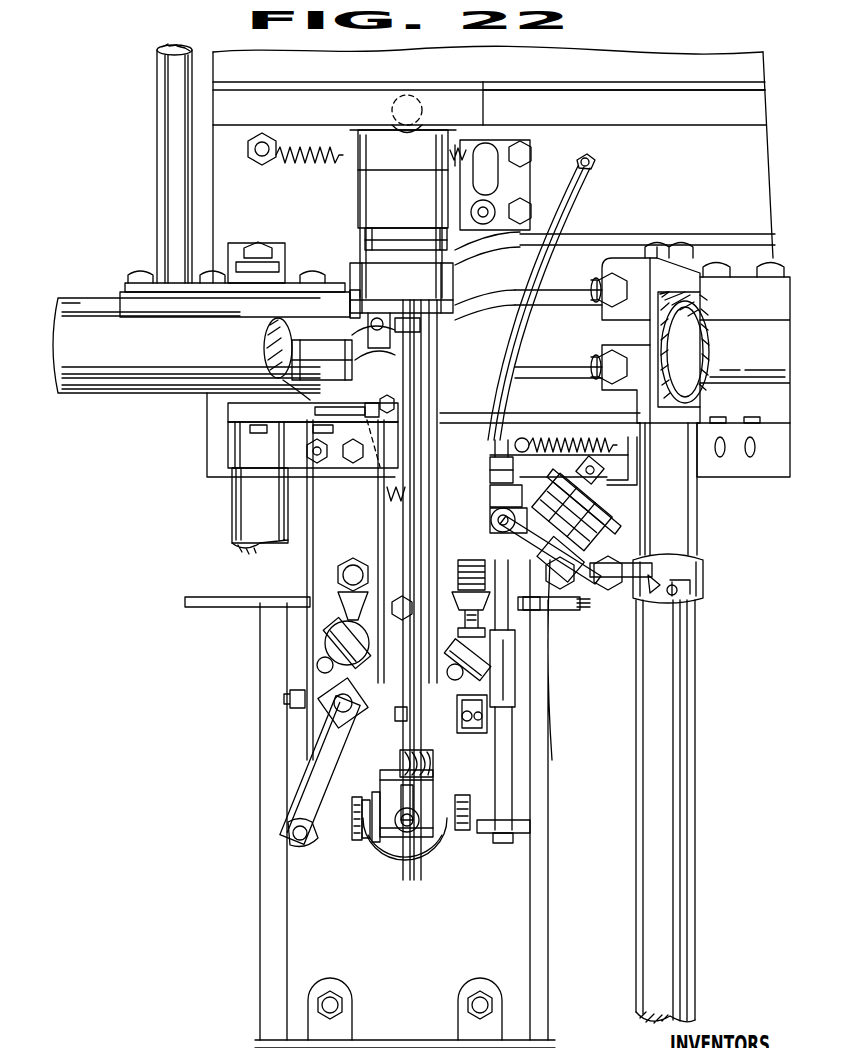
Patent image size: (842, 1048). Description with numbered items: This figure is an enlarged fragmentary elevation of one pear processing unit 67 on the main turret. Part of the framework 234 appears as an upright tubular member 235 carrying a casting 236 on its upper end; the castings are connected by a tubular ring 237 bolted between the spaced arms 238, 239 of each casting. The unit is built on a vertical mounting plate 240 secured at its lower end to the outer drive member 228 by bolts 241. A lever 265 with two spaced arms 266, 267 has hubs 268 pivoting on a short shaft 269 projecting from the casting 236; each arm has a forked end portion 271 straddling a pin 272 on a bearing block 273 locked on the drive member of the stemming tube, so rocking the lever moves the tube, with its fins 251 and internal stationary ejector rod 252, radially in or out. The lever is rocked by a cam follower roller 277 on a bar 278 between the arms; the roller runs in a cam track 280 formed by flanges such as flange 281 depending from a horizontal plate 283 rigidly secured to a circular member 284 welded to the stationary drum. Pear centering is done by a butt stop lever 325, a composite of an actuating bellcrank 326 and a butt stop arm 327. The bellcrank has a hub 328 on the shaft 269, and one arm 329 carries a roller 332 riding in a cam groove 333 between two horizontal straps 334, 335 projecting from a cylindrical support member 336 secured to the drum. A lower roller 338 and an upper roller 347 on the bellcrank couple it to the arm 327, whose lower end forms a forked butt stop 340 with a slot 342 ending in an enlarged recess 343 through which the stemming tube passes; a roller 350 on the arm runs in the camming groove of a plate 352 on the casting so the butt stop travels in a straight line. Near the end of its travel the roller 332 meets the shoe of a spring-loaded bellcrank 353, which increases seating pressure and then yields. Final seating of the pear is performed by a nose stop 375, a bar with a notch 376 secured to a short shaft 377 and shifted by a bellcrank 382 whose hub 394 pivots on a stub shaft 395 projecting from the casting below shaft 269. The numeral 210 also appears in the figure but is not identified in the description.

The circular member 284 is at (322, 78).
The horizontal plate 283 is at (553, 88).
The flange 281 is at (635, 119).
The cam follower roller 277 is at (390, 108).
The cam track 280 is at (700, 134).
The casting 236 is at (245, 244).
The lever arm 266 is at (358, 198).
The lever arm 267 is at (440, 195).
The spring loaded bellcrank 353 is at (463, 220).
The bar 278 is at (381, 164).
The hub 328 is at (418, 292).
The short shaft 269 is at (450, 292).
The horizontal strap 334 is at (607, 236).
The cam groove 333 is at (580, 243).
The horizontal strap 335 is at (530, 297).
The cylindrical support member 336 is at (630, 247).
The arm of casting 238 is at (723, 287).
The arm of casting 239 is at (717, 413).
The tubular ring 237 is at (127, 350).
The hub 268 is at (360, 303).
The hub 394 is at (273, 332).
The stub shaft 395 is at (273, 350).
The roller 347 is at (393, 377).
The arm of bellcrank 329 is at (420, 322).
The roller 332 is at (412, 350).
The butt stop arm 327 is at (421, 383).
The actuating bellcrank 326 is at (438, 398).
The roller 350 is at (310, 415).
The cylinder 210 is at (217, 432).
The plate 352 is at (333, 450).
The lever 265 is at (369, 535).
The butt stop lever 325 is at (414, 565).
The bellcrank 382 is at (310, 620).
The short shaft 377 is at (333, 694).
The roller 338 is at (397, 714).
The nose stop 375 is at (308, 790).
The notch 376 is at (298, 828).
The pin 272 is at (352, 823).
The forked end portion 271 is at (380, 840).
The enlarged recess 343 is at (400, 837).
The bearing block 273 is at (402, 832).
The ejector rod 252 is at (433, 817).
The fins 251 is at (417, 840).
The slot 342 is at (423, 778).
The forked butt stop 340 is at (453, 837).
The mounting plate 240 is at (385, 958).
The bolts 241 is at (477, 1005).
The outer drive member 228 is at (367, 1047).
The vertical tubular member 235 is at (663, 670).
The framework 234 is at (698, 818).
The pear processing unit 67 is at (176, 667).